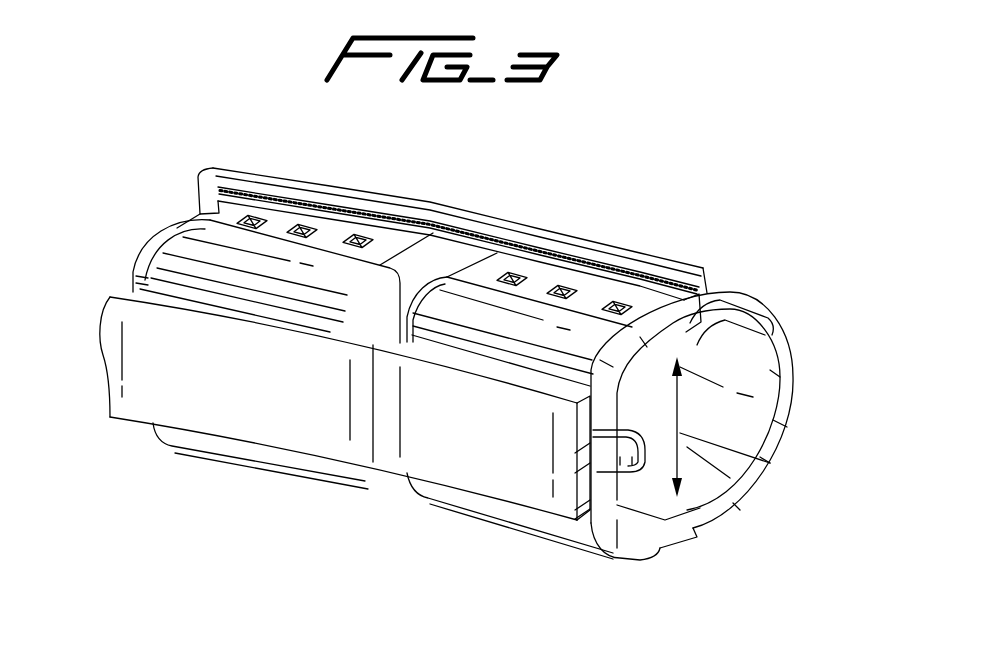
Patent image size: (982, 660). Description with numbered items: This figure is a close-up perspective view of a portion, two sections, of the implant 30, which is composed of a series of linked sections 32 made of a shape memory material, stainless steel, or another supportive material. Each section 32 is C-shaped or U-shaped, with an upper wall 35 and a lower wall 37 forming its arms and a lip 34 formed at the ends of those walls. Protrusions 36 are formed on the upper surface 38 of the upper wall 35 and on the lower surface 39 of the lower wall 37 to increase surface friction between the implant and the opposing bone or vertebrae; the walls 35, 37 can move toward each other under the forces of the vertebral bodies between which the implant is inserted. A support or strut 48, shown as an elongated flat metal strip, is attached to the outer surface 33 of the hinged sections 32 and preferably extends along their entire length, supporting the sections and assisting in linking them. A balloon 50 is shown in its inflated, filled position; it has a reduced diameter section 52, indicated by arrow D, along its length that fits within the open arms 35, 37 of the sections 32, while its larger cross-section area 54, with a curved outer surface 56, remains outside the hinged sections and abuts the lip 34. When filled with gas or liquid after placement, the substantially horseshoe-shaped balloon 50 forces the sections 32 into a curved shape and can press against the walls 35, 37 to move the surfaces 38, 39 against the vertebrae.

The implant 30 is at (280, 524).
The sections 32 is at (317, 273).
The outer surface 33 is at (165, 283).
The lip 34 is at (630, 287).
The upper wall 35 is at (440, 205).
The protrusions 36 is at (300, 230).
The lower wall 37 is at (667, 533).
The upper surface 38 is at (230, 210).
The lower surface 39 is at (650, 553).
The strut 48 is at (503, 467).
The balloon 50 is at (263, 174).
The reduced diameter section 52 is at (770, 323).
The larger cross-section area 54 is at (793, 353).
The curved outer surface 56 is at (787, 420).
The arrow D is at (767, 458).